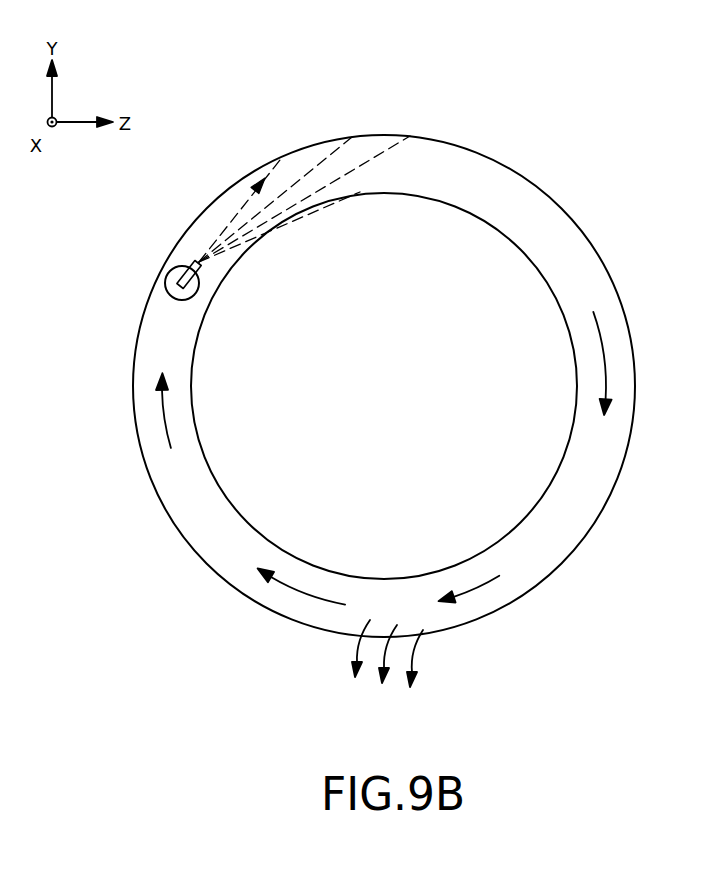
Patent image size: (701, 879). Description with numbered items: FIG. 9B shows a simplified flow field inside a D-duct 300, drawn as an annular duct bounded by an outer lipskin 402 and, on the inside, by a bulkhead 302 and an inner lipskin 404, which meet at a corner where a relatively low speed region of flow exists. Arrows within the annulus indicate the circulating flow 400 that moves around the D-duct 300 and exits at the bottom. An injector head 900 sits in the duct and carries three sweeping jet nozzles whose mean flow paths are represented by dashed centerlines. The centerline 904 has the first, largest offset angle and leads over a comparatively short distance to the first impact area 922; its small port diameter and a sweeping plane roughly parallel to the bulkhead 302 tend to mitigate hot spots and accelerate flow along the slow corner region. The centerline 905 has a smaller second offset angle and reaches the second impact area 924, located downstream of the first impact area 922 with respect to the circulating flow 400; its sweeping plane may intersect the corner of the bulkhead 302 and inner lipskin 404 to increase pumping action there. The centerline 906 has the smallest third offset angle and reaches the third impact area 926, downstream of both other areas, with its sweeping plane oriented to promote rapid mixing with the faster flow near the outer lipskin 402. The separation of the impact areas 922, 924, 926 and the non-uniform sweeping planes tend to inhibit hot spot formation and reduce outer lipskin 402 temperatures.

The D-duct 300 is at (548, 143).
The bulkhead 302 is at (575, 271).
The circulating flow 400 is at (607, 350).
The outer lipskin 402 is at (616, 280).
The inner lipskin 404 is at (563, 322).
The injector head 900 is at (140, 262).
The centerline 904 is at (250, 192).
The centerline 905 is at (307, 173).
The centerline 906 is at (377, 157).
The first impact area 922 is at (281, 158).
The second impact area 924 is at (341, 131).
The third impact area 926 is at (421, 137).